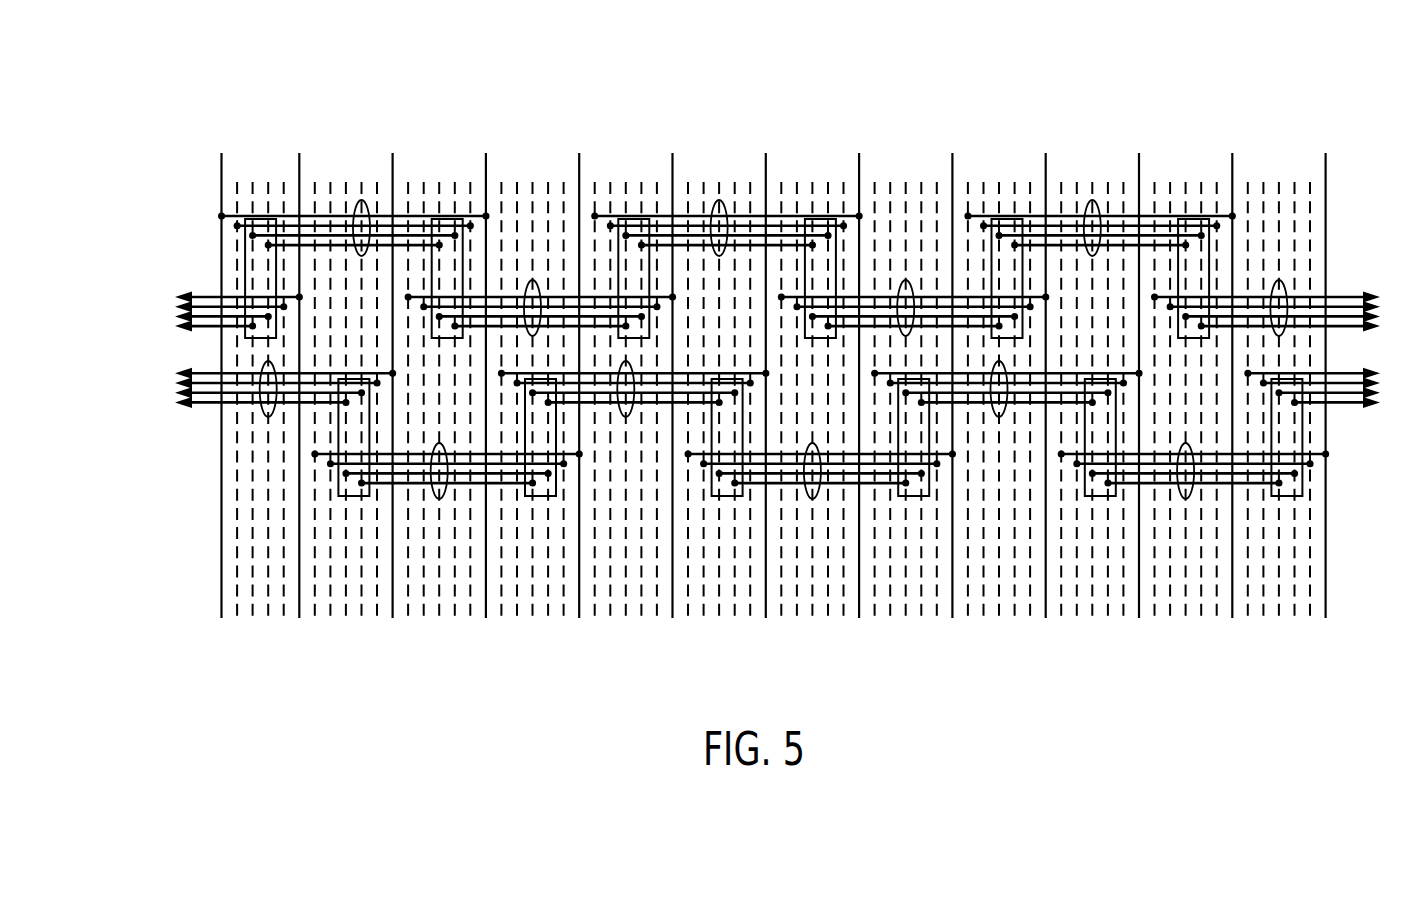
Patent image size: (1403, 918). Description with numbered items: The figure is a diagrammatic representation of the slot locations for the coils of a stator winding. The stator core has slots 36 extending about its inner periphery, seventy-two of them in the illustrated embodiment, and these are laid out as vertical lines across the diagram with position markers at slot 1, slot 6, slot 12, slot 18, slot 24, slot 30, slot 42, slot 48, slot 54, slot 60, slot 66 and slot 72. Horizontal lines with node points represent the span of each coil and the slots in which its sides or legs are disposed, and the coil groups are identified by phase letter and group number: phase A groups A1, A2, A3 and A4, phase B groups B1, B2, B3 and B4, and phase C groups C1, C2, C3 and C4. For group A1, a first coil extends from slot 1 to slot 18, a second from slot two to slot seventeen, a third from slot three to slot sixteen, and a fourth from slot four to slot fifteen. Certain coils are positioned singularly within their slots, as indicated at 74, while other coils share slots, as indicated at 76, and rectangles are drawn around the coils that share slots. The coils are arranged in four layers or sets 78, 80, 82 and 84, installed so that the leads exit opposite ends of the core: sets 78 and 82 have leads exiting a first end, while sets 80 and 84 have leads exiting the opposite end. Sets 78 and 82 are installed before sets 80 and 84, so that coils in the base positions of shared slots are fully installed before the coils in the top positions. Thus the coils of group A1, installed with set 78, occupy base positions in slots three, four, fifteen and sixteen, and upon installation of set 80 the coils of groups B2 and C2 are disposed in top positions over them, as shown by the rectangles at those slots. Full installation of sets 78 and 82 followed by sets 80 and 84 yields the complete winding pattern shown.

The slot 1 is at (219, 365).
The slot 6 is at (300, 365).
The slot 12 is at (393, 365).
The slot 18 is at (486, 365).
The slot 24 is at (579, 365).
The slot 30 is at (673, 365).
The slots 36 is at (925, 73).
The slot 42 is at (859, 365).
The slot 48 is at (952, 365).
The slot 54 is at (1046, 365).
The slot 60 is at (1139, 365).
The slot 66 is at (1232, 365).
The slot 72 is at (1326, 365).
The singularly positioned coils 74 is at (338, 178).
The shared-slot coils 76 is at (277, 166).
The first coil set 78 is at (176, 202).
The second coil set 80 is at (176, 278).
The third coil set 82 is at (176, 355).
The fourth coil set 84 is at (176, 438).
The phase A first coil group A1 is at (362, 200).
The phase A second coil group A2 is at (906, 280).
The phase A third coil group A3 is at (626, 417).
The phase A fourth coil group A4 is at (1186, 499).
The phase B first coil group B1 is at (719, 200).
The phase B second coil group B2 is at (1279, 280).
The phase B third coil group B3 is at (999, 417).
The phase B fourth coil group B4 is at (439, 499).
The phase C first coil group C1 is at (1092, 200).
The phase C second coil group C2 is at (532, 280).
The phase C third coil group C3 is at (268, 417).
The phase C fourth coil group C4 is at (812, 499).